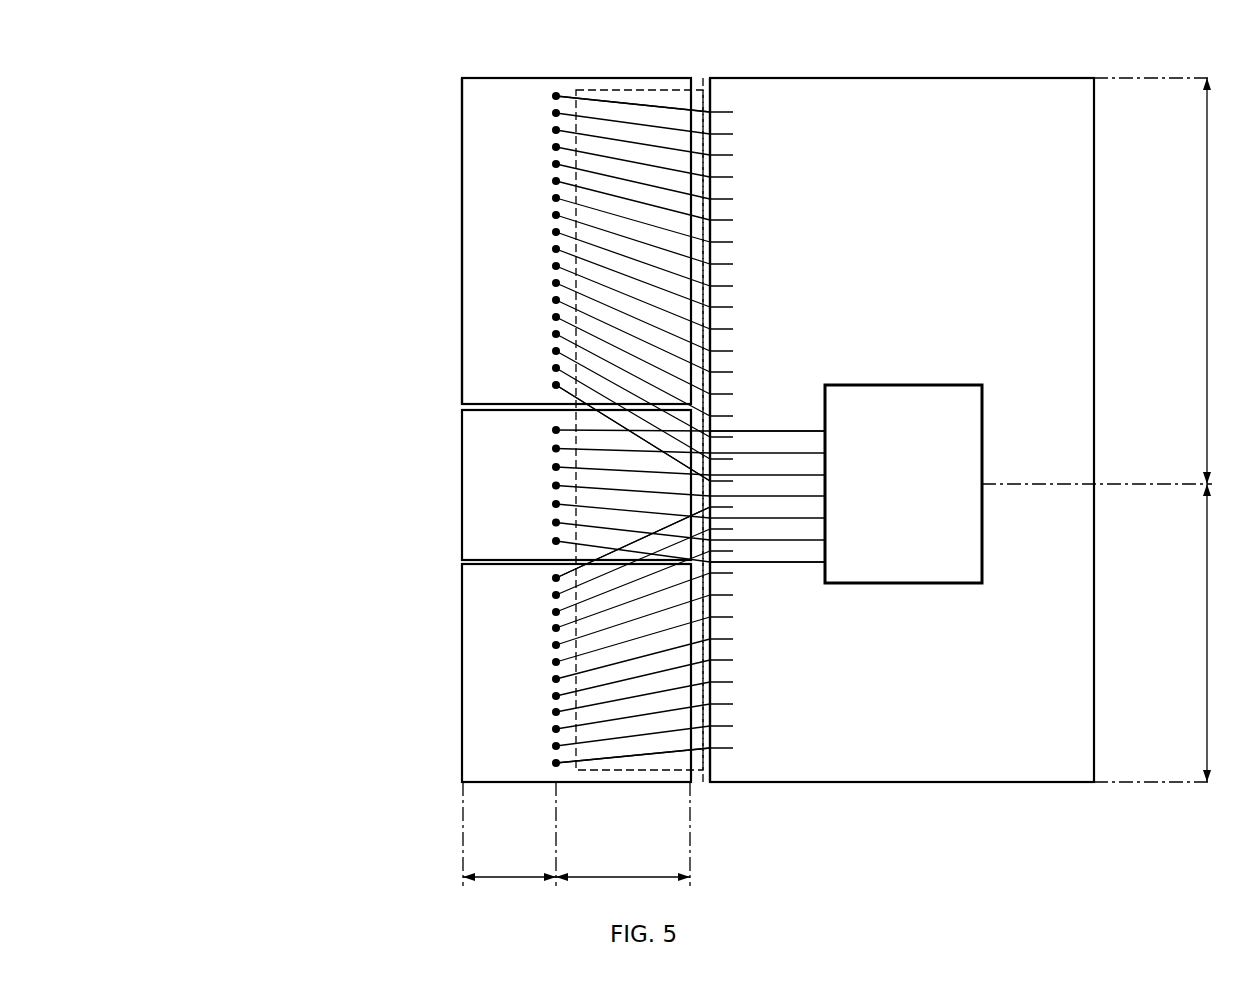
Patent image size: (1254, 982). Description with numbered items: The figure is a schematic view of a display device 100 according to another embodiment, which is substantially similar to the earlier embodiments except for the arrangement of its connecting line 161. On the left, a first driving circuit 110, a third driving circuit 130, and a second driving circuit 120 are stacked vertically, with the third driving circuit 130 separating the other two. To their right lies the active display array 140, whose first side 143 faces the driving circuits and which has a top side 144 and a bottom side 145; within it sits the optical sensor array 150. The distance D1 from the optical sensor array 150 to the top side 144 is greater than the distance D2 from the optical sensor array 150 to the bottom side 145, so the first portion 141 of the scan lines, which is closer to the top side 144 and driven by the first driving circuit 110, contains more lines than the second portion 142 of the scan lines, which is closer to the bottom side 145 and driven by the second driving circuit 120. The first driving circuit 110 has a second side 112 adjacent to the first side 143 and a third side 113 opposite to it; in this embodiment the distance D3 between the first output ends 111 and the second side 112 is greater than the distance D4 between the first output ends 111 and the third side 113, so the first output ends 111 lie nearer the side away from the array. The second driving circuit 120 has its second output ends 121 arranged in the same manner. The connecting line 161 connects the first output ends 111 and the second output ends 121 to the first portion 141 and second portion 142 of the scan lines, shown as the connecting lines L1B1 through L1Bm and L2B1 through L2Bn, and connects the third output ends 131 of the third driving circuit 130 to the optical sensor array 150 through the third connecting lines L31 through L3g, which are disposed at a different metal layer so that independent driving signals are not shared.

The display device 100 is at (192, 84).
The first driving circuit 110 is at (462, 241).
The first output ends 111 is at (540, 96).
The second side 112 is at (703, 78).
The third side 113 is at (462, 97).
The second driving circuit 120 is at (462, 669).
The second output ends 121 is at (540, 578).
The third driving circuit 130 is at (462, 481).
The third output ends 131 is at (540, 430).
The active display array 140 is at (1094, 241).
The first portion of the scan lines 141 is at (750, 112).
The second portion of the scan lines 142 is at (750, 505).
The first side 143 is at (706, 782).
The top side 144 is at (903, 78).
The bottom side 145 is at (886, 782).
The optical sensor array 150 is at (983, 438).
The connecting line 161 is at (655, 90).
The connecting line L1B1 is at (600, 100).
The connecting line L1Bm is at (565, 391).
The connecting line L2B1 is at (566, 574).
The connecting line L2Bn is at (626, 770).
The third connecting line L31 is at (795, 431).
The third connecting line L3g is at (795, 562).
The distance D1 is at (1102, 281).
The distance D2 is at (1158, 633).
The distance D3 is at (623, 834).
The distance D4 is at (509, 834).